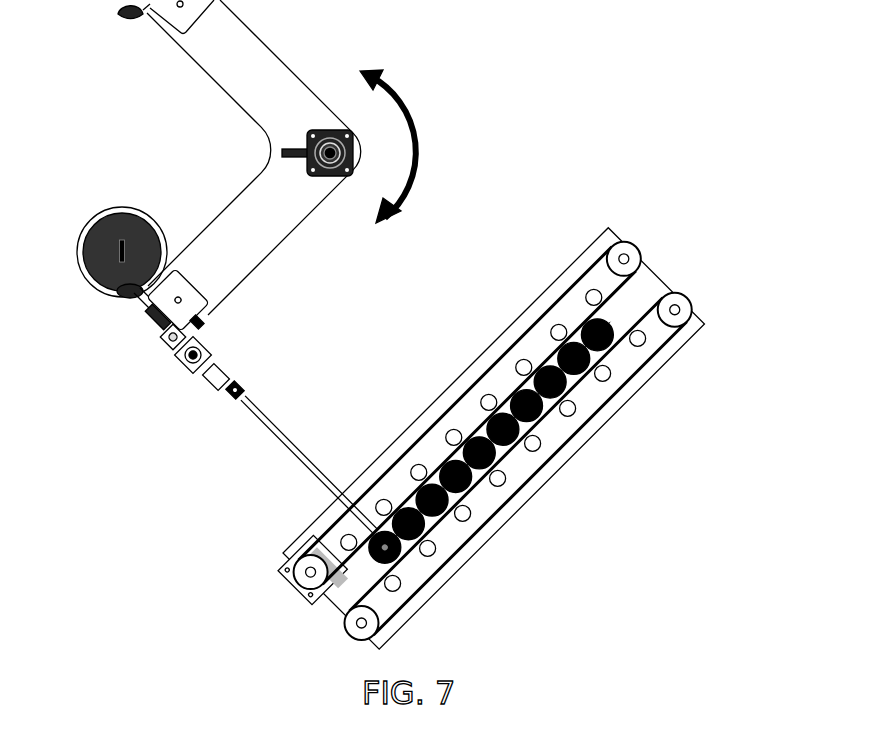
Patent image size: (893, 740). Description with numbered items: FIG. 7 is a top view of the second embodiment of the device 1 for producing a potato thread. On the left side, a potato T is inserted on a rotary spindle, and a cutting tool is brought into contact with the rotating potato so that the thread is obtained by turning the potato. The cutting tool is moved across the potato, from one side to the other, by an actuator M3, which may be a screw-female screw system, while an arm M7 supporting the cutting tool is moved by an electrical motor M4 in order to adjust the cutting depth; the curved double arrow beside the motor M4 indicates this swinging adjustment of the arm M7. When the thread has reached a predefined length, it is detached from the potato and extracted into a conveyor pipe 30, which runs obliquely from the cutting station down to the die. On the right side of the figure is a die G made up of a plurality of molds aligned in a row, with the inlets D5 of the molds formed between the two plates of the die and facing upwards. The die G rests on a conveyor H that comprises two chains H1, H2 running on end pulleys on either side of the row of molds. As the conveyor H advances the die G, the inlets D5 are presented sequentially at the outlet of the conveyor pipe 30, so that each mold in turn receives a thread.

The handling apparatus 1 is at (393, 324).
The potato T is at (85, 233).
The actuator M3 is at (148, 323).
The electrical motor M4 is at (323, 128).
The arm M7 is at (247, 252).
The conveyor pipe 30 is at (290, 443).
The conveyor H is at (543, 500).
The chain H1 is at (577, 275).
The chain H2 is at (608, 402).
The inlets D5 is at (433, 530).
The die G is at (618, 320).